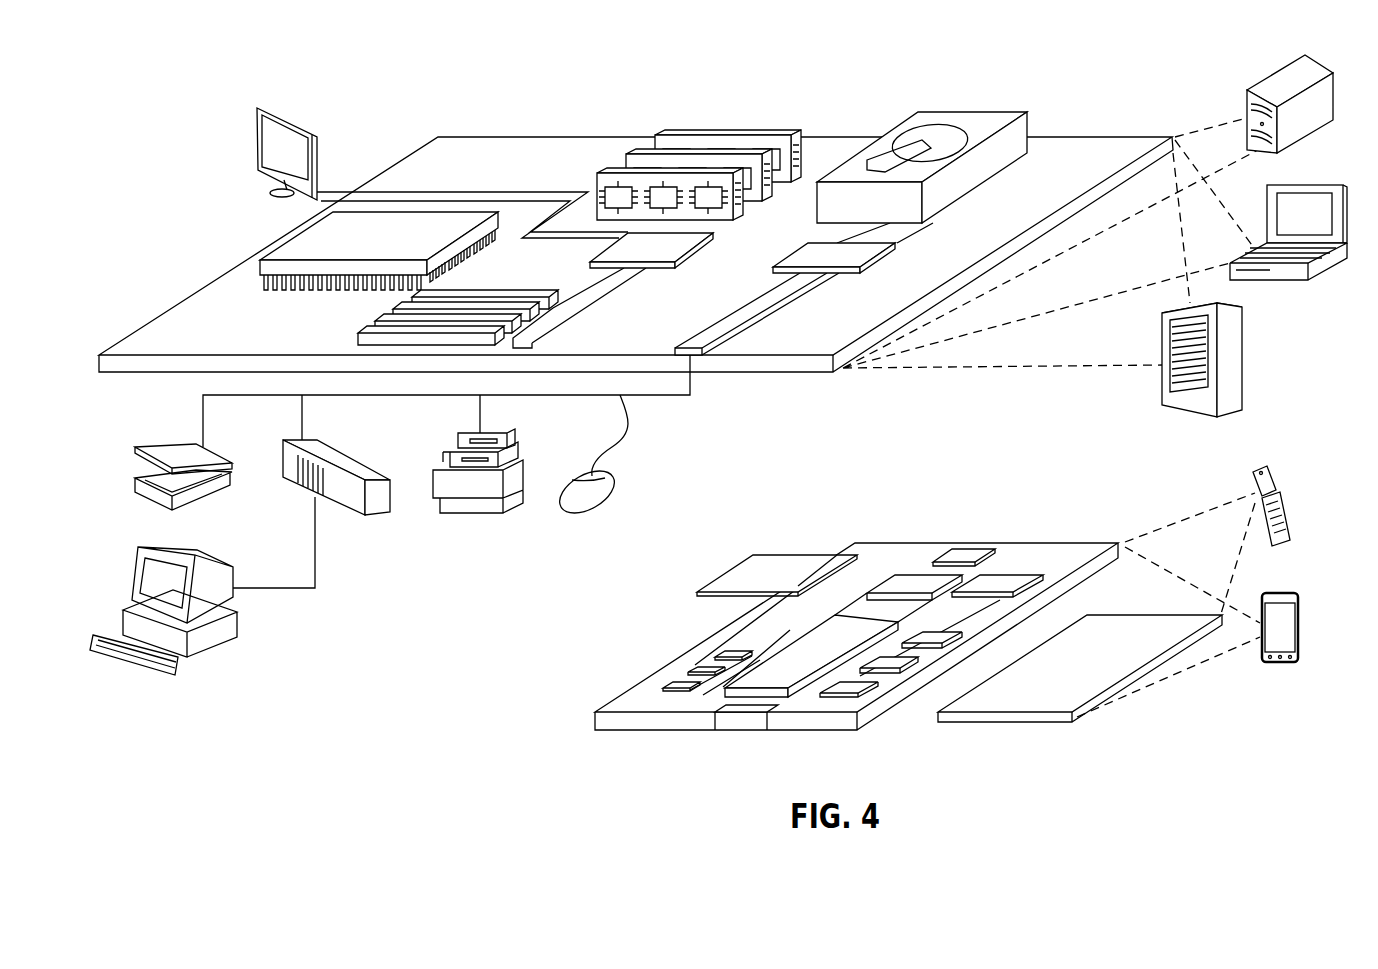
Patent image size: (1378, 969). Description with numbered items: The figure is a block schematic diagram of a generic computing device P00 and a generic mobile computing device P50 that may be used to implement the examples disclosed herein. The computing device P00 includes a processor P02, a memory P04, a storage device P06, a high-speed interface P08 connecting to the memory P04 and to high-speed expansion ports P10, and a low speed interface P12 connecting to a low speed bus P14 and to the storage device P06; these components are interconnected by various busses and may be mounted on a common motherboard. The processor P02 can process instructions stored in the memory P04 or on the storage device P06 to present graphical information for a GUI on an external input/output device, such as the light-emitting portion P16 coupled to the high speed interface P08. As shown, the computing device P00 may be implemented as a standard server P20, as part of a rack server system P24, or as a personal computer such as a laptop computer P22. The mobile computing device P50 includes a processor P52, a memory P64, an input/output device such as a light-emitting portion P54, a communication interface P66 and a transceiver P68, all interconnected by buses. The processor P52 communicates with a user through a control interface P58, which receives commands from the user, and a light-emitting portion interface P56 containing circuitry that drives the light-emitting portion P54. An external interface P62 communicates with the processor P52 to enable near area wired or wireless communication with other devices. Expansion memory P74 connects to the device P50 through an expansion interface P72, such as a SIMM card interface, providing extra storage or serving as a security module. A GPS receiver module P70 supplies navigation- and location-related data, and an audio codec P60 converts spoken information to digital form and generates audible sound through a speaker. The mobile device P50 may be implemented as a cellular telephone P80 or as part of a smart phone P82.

The computing device P00 is at (394, 90).
The processor P02 is at (288, 244).
The memory P04 is at (732, 128).
The storage device P06 is at (963, 115).
The high-speed interface P08 is at (665, 245).
The high-speed expansion ports P10 is at (393, 319).
The low speed interface P12 is at (808, 250).
The low speed bus P14 is at (693, 345).
The light-emitting portion P16 is at (262, 105).
The standard server P20 is at (1268, 85).
The laptop computer P22 is at (1323, 185).
The rack server system P24 is at (1243, 357).
The mobile computer device P50 is at (1134, 722).
The processor P52 is at (780, 662).
The light-emitting portion P54 is at (1118, 632).
The light-emitting portion interface P56 is at (858, 687).
The control interface P58 is at (897, 663).
The audio codec P60 is at (935, 633).
The external interface P62 is at (740, 716).
The memory P64 is at (690, 667).
The communication interface P66 is at (913, 577).
The transceiver P68 is at (1003, 580).
The GPS receiver module P70 is at (963, 553).
The expansion interface P72 is at (837, 555).
The expansion memory P74 is at (753, 555).
The cellular telephone P80 is at (1265, 470).
The smart phone P82 is at (1270, 595).